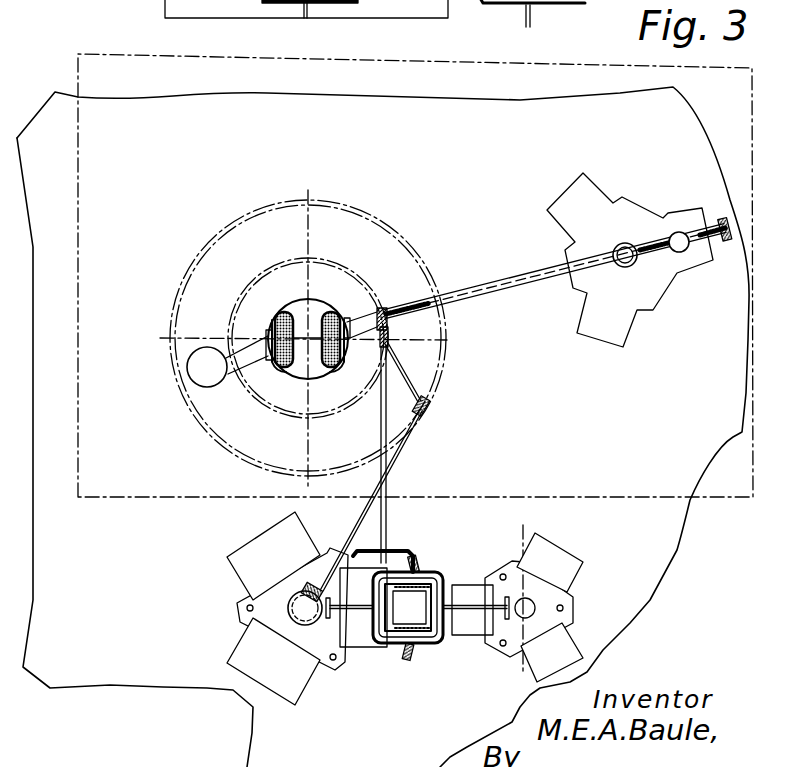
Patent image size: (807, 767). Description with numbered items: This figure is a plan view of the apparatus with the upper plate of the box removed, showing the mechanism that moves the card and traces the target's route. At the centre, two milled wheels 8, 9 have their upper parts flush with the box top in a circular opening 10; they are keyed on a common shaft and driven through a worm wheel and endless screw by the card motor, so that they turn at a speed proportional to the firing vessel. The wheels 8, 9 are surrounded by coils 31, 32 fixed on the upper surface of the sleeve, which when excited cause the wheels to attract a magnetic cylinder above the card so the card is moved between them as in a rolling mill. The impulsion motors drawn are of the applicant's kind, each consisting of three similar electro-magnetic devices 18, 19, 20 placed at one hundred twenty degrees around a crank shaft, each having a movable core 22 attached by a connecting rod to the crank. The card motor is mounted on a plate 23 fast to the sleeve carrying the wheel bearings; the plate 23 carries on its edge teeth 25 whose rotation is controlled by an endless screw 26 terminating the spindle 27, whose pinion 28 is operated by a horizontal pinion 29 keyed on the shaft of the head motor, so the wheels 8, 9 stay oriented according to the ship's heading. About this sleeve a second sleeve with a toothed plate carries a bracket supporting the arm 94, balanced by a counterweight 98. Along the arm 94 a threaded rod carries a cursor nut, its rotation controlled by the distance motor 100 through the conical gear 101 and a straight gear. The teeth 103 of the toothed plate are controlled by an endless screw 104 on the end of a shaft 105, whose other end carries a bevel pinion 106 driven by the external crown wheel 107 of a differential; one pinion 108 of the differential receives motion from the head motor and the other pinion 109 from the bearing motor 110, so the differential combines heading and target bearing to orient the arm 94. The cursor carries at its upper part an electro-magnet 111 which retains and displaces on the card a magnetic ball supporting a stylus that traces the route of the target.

The milled wheel 8 is at (280, 371).
The milled wheel 9 is at (334, 370).
The circular opening 10 is at (312, 310).
The electro-magnetic device 18 is at (238, 655).
The electro-magnetic device 19 is at (236, 552).
The electro-magnetic device 20 is at (358, 640).
The movable core 22 is at (262, 1).
The plate 23 is at (420, 372).
The teeth 25 is at (320, 348).
The endless screw 26 is at (432, 410).
The spindle 27 is at (400, 457).
The pinion 28 is at (307, 583).
The horizontal pinion 29 is at (295, 600).
The coil 31 is at (278, 323).
The coil 32 is at (328, 307).
The arm 94 is at (516, 277).
The counterweight 98 is at (208, 357).
The distance motor 100 is at (660, 285).
The conical gear 101 is at (628, 266).
The teeth 103 is at (308, 338).
The endless screw 104 is at (388, 340).
The shaft 105 is at (380, 424).
The bevel pinion 106 is at (390, 547).
The external crown wheel 107 is at (418, 563).
The pinion 108 is at (397, 620).
The pinion 109 is at (418, 636).
The bearing motor 110 is at (577, 612).
The electro-magnet 111 is at (678, 233).